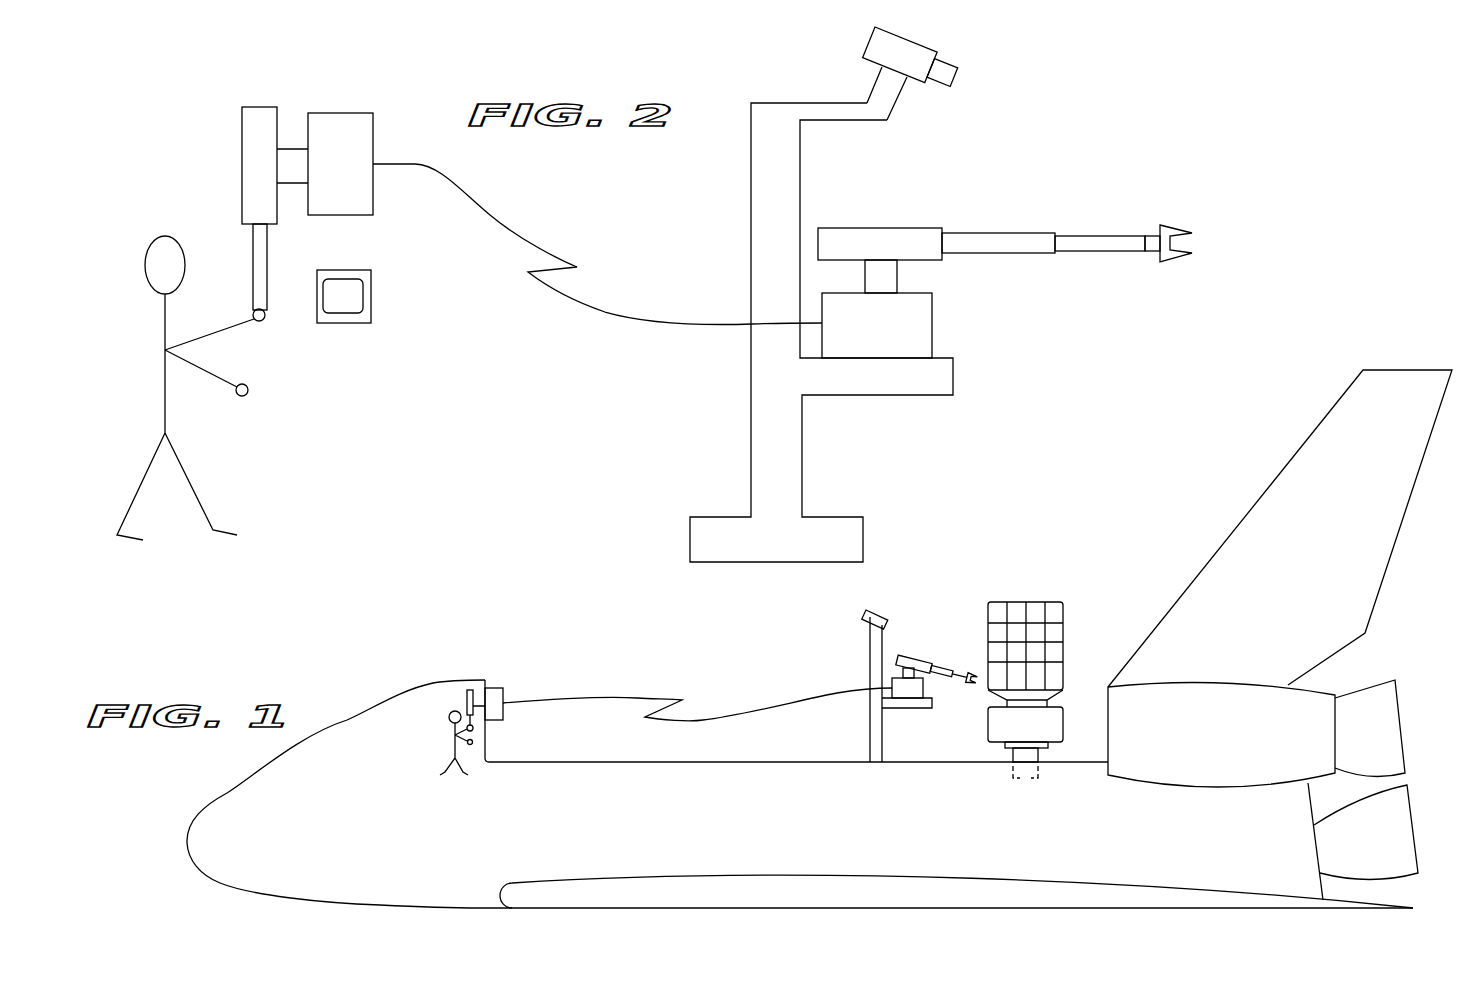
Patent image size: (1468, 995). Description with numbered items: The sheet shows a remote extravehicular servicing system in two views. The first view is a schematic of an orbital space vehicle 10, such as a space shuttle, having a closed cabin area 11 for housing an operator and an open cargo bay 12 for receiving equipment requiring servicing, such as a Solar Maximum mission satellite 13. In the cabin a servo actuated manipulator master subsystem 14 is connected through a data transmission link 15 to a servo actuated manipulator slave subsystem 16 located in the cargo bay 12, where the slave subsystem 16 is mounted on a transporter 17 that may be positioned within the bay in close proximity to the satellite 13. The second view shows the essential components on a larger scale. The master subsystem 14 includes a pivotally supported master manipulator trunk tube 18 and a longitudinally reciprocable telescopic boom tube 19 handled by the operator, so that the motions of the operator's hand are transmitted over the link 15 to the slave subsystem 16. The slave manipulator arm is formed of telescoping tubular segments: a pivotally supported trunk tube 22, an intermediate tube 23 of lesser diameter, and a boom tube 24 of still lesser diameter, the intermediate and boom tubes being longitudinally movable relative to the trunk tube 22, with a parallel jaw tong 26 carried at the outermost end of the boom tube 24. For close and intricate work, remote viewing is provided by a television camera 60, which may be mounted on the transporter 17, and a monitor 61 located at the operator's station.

In FIG. 1, the orbital space vehicle 10 is at (226, 793).
In FIG. 1, the closed cabin area 11 is at (432, 733).
In FIG. 1, the open cargo bay 12 is at (810, 742).
In FIG. 1, the Solar Maximum mission satellite 13 is at (1063, 623).
In FIG. 2, the servo actuated manipulator master subsystem 14 is at (352, 106).
In FIG. 1, the servo actuated manipulator master subsystem 14 is at (459, 699).
In FIG. 2, the data transmission link 15 is at (608, 313).
In FIG. 1, the data transmission link 15 is at (592, 697).
In FIG. 2, the servo actuated manipulator slave subsystem 16 is at (975, 232).
In FIG. 1, the servo actuated manipulator slave subsystem 16 is at (913, 650).
In FIG. 1, the transporter 17 is at (880, 727).
In FIG. 2, the master manipulator trunk tube 18 is at (242, 146).
In FIG. 2, the telescopic boom tube 19 is at (253, 257).
In FIG. 2, the trunk tube 22 is at (852, 228).
In FIG. 2, the intermediate tube 23 is at (1045, 255).
In FIG. 2, the boom tube 24 is at (1093, 233).
In FIG. 2, the parallel jaw tong 26 is at (1182, 260).
In FIG. 2, the television camera 60 is at (917, 83).
In FIG. 2, the monitor 61 is at (375, 292).